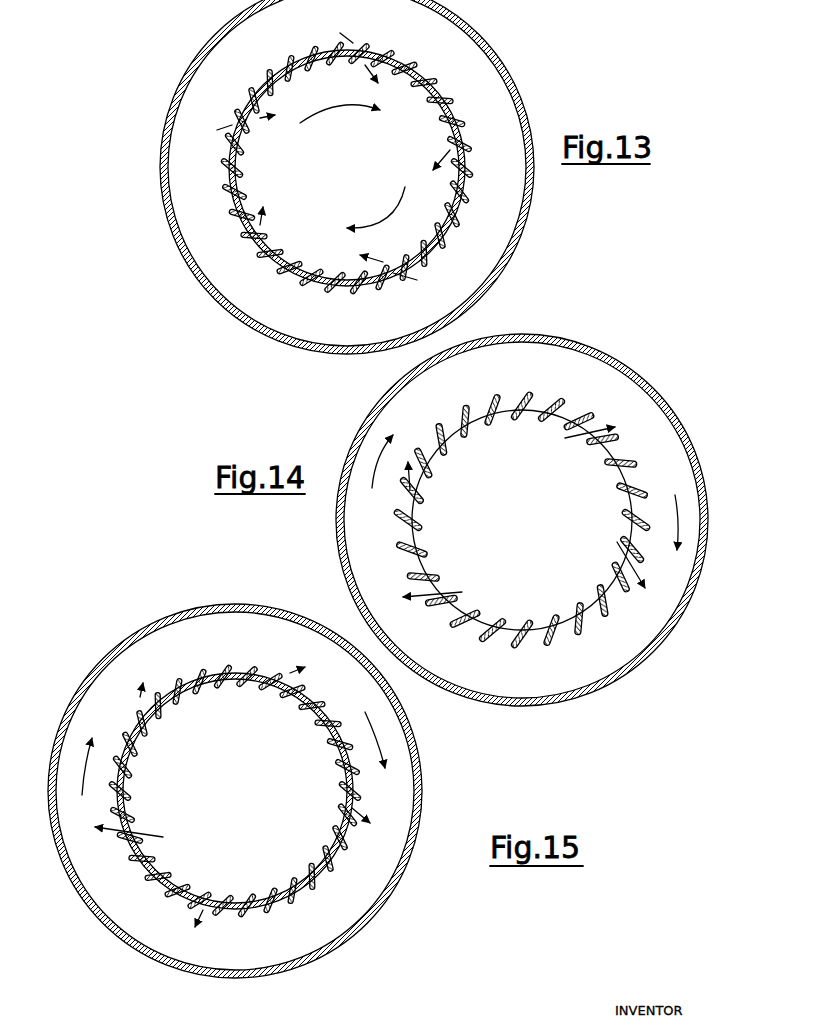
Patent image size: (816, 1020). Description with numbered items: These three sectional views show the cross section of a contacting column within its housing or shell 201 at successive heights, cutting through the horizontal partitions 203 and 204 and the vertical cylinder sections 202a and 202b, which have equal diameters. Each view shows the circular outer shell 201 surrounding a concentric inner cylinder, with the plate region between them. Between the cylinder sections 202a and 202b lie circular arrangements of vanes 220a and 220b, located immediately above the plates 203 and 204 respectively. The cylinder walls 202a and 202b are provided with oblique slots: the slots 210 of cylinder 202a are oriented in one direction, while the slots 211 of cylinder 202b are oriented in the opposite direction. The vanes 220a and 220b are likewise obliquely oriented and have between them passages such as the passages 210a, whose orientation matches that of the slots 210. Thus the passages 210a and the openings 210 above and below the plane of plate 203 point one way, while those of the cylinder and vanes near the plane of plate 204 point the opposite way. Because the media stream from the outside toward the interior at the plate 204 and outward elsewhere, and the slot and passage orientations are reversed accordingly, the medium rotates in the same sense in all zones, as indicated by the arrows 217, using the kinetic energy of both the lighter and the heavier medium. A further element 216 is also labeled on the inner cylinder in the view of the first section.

In FIG. 13, the housing 201 is at (505, 64).
In FIG. 14, the housing 201 is at (630, 372).
In FIG. 15, the housing 201 is at (402, 880).
In FIG. 13, the horizontal partition 203 is at (270, 189).
In FIG. 14, the horizontal partition 203 is at (583, 592).
In FIG. 15, the horizontal partition 203 is at (182, 845).
In FIG. 13, the horizontal partition 204 is at (347, 173).
In FIG. 14, the horizontal partition 204 is at (365, 553).
In FIG. 15, the horizontal partition 204 is at (385, 793).
In FIG. 15, the vertical cylinder section 202a is at (238, 672).
In FIG. 13, the vertical cylinder section 202b is at (445, 100).
In FIG. 15, the oblique slot 210 is at (130, 775).
In FIG. 14, the passage 210a is at (565, 413).
In FIG. 13, the oblique slot 211 is at (250, 100).
In FIG. 13, the vane 216 is at (476, 125).
In FIG. 13, the arrow 217 is at (373, 217).
In FIG. 14, the arrow 217 is at (377, 465).
In FIG. 15, the arrow 217 is at (383, 744).
In FIG. 15, the circular arrangement of vanes 220a is at (200, 673).
In FIG. 13, the circular arrangement of vanes 220b is at (320, 47).
In FIG. 14, the circular arrangement of vanes 220b is at (530, 397).